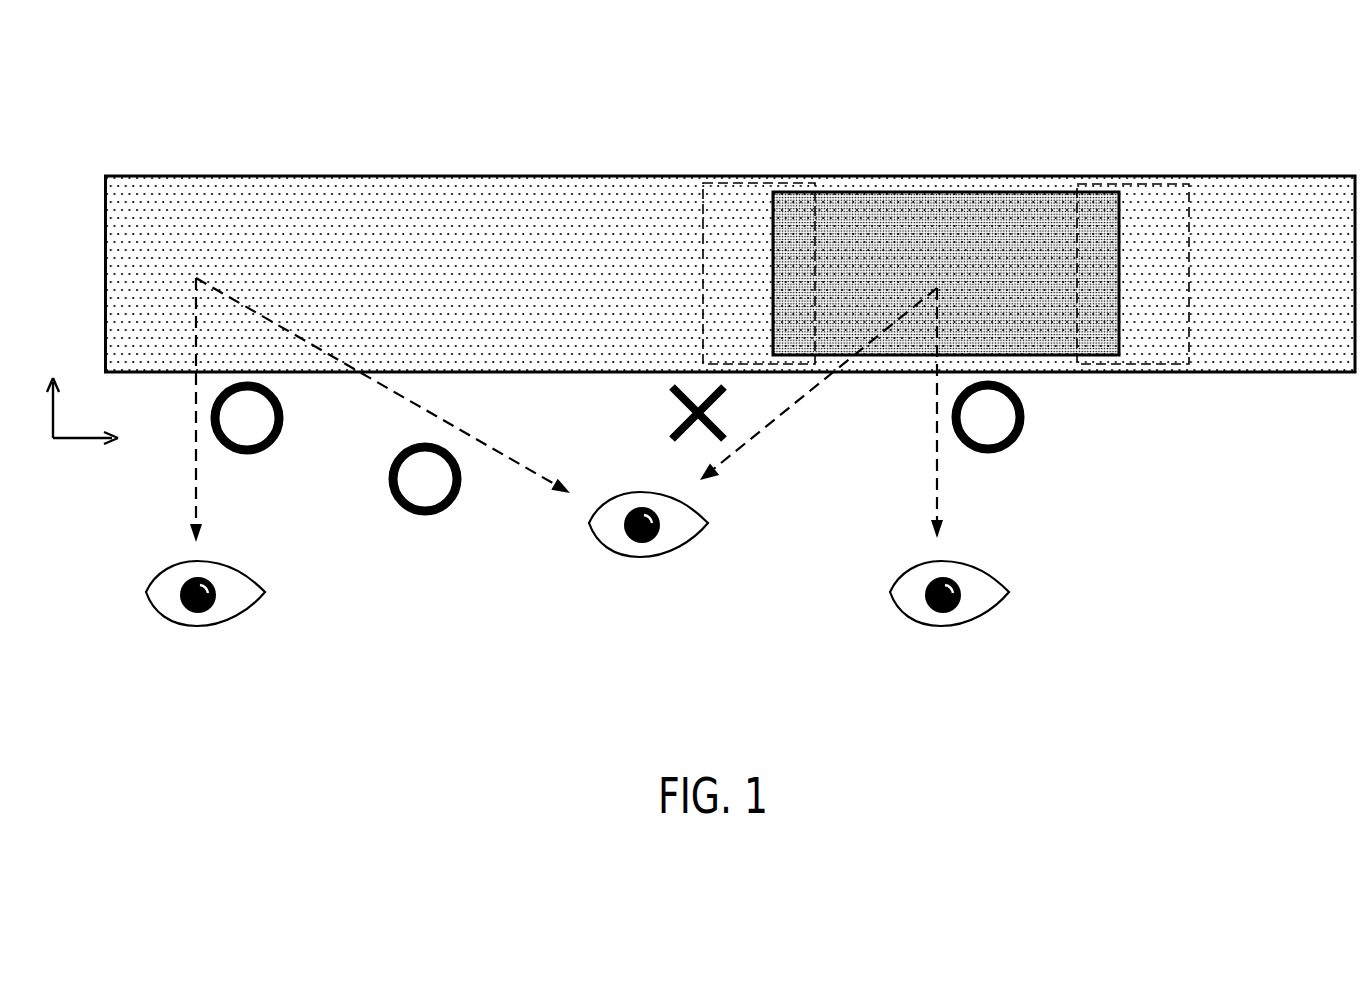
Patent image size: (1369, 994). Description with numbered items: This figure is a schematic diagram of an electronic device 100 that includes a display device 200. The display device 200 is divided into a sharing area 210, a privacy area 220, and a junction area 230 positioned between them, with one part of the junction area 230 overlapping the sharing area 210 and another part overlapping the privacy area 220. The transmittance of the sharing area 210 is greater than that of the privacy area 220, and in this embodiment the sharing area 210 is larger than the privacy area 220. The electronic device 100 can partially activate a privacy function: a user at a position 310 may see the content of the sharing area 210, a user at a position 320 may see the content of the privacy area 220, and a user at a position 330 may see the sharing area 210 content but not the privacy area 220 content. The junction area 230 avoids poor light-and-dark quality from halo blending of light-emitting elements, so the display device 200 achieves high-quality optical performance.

The electronic device 100 is at (700, 376).
The display device 200 is at (731, 249).
The sharing area 210 is at (407, 190).
The privacy area 220 is at (1090, 340).
The junction area 230 is at (776, 180).
The position 310 is at (233, 617).
The position 320 is at (977, 618).
The position 330 is at (673, 547).